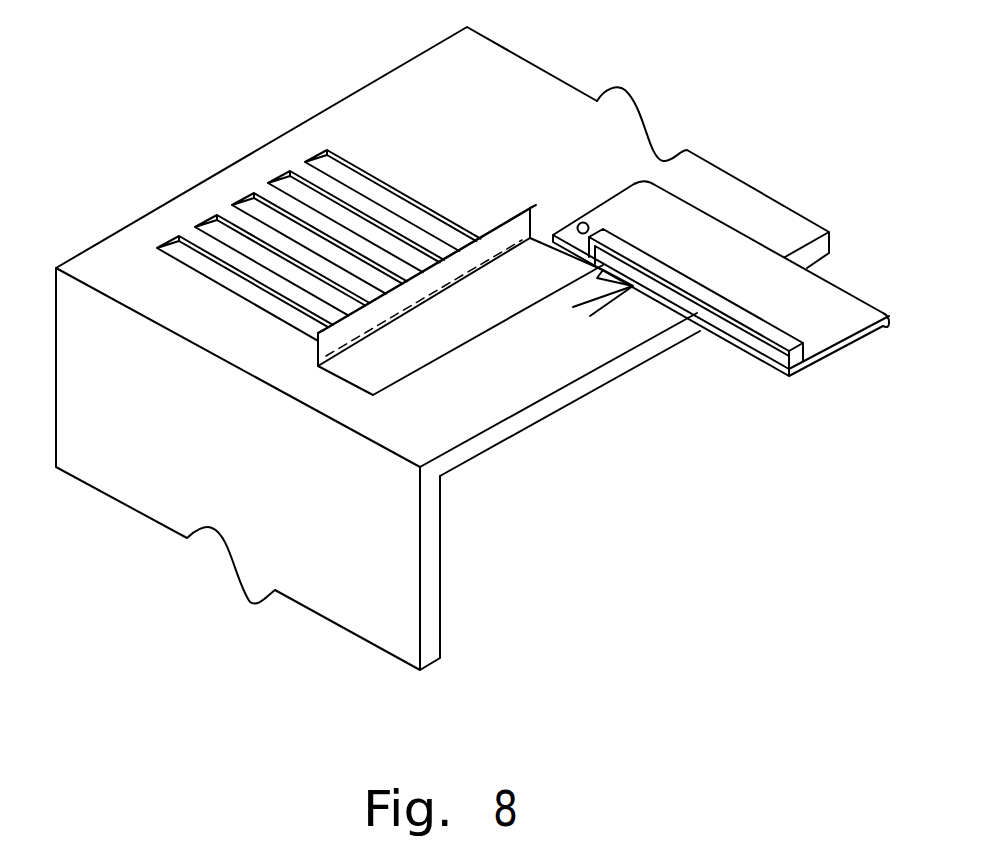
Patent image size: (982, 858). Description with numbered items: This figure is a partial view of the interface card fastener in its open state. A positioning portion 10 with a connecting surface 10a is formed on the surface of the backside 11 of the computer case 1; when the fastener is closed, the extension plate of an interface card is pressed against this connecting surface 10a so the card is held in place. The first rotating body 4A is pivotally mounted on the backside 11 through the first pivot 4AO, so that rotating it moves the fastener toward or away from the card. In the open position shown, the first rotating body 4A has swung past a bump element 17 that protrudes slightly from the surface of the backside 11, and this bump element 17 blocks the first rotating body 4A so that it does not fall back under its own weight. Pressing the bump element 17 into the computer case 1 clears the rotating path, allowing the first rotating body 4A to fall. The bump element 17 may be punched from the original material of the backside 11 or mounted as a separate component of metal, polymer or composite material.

The computer case 1 is at (232, 133).
The backside of the computer case 11 is at (422, 108).
The positioning portion 10 is at (528, 207).
The connecting surface 10a is at (323, 345).
The bump element 17 is at (622, 287).
The first rotating body 4A is at (816, 350).
The first pivot 4AO is at (590, 224).